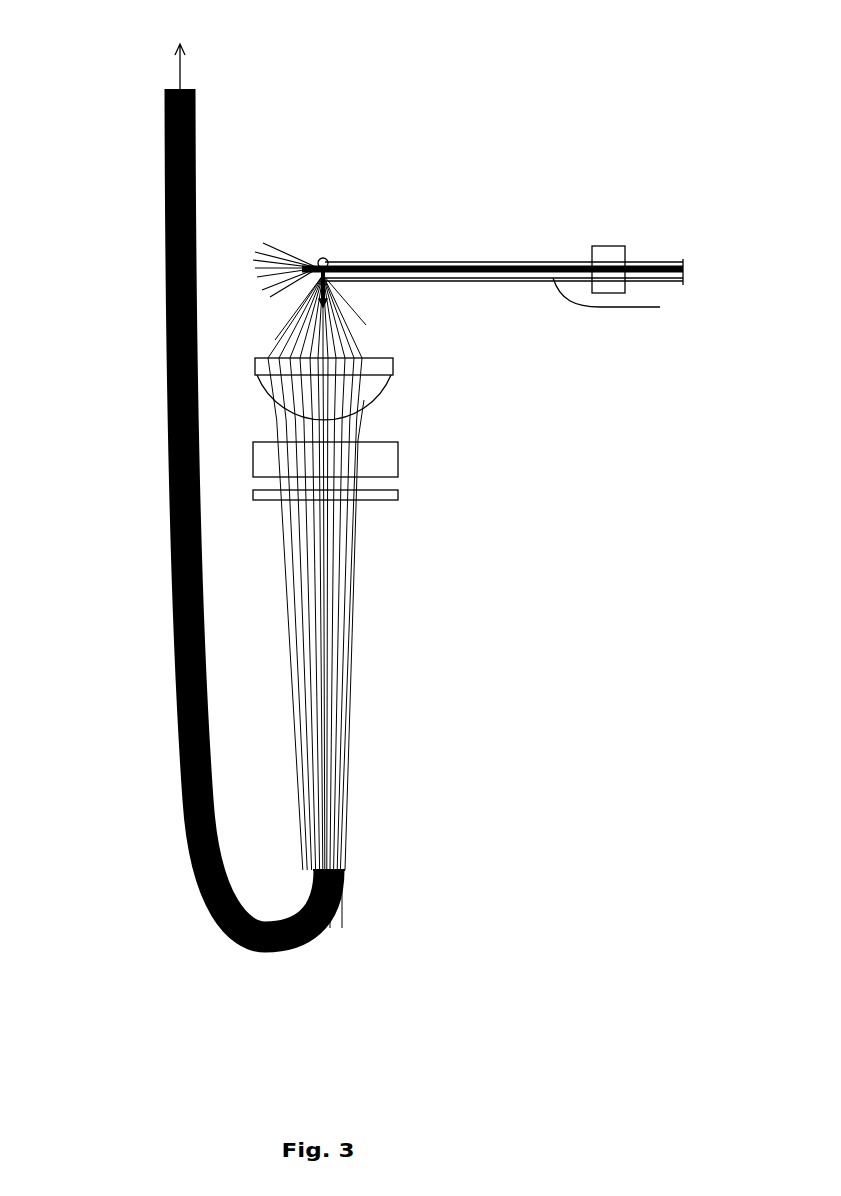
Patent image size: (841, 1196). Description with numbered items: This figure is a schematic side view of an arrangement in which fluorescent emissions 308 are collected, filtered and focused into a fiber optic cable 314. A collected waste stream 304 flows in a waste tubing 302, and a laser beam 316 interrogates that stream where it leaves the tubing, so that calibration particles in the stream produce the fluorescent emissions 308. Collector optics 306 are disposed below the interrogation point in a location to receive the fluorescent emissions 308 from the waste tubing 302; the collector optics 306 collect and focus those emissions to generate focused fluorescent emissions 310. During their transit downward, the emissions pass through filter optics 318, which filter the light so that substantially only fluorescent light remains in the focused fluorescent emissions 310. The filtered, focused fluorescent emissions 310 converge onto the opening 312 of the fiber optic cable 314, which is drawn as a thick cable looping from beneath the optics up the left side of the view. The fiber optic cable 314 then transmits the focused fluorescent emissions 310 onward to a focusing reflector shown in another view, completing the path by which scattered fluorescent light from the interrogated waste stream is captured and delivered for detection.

The waste tubing 302 is at (328, 257).
The collected waste stream 304 is at (322, 264).
The collector optics 306 is at (388, 383).
The fluorescent emissions 308 is at (373, 308).
The focused fluorescent emissions 310 is at (364, 689).
The opening of fiber optic cable 312 is at (343, 868).
The fiber optic cable 314 is at (200, 883).
The laser beam 316 is at (428, 262).
The filter optics 318 is at (408, 442).